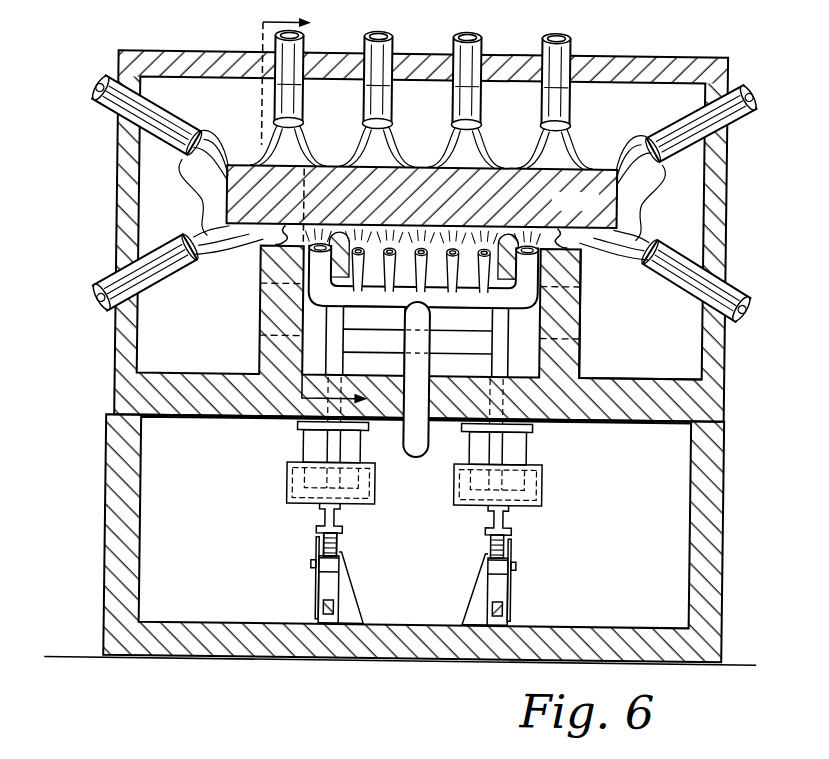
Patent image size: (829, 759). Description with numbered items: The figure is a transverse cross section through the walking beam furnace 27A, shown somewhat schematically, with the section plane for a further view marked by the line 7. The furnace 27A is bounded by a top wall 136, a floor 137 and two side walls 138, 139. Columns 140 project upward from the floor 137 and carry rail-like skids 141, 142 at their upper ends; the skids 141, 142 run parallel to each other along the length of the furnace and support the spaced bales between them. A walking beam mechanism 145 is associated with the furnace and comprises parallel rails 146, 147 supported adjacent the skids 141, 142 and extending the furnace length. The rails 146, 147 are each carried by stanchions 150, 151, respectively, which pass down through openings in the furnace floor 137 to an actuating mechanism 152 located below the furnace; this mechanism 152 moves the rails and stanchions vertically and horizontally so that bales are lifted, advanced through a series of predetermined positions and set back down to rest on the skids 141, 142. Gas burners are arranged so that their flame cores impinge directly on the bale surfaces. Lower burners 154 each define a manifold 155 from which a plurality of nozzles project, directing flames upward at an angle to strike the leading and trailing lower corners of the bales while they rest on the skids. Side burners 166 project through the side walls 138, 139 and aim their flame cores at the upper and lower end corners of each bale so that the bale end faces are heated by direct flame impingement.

The top wall 136 is at (618, 54).
The floor 137 is at (603, 376).
The side wall 138 is at (117, 239).
The side wall 139 is at (725, 218).
The column 140 is at (579, 271).
The skid 141 is at (264, 252).
The skid 142 is at (422, 196).
The walking beam mechanism 145 is at (272, 538).
The rail 146 is at (332, 259).
The rail 147 is at (580, 313).
The stanchion 150 is at (334, 361).
The stanchion 151 is at (494, 366).
The actuating mechanism 152 is at (318, 553).
The lower burner 154 is at (366, 306).
The manifold 155 is at (462, 306).
The side burner 166 is at (112, 119).
The walking beam furnace 27A is at (88, 510).
The section line 7- 7 is at (324, 211).